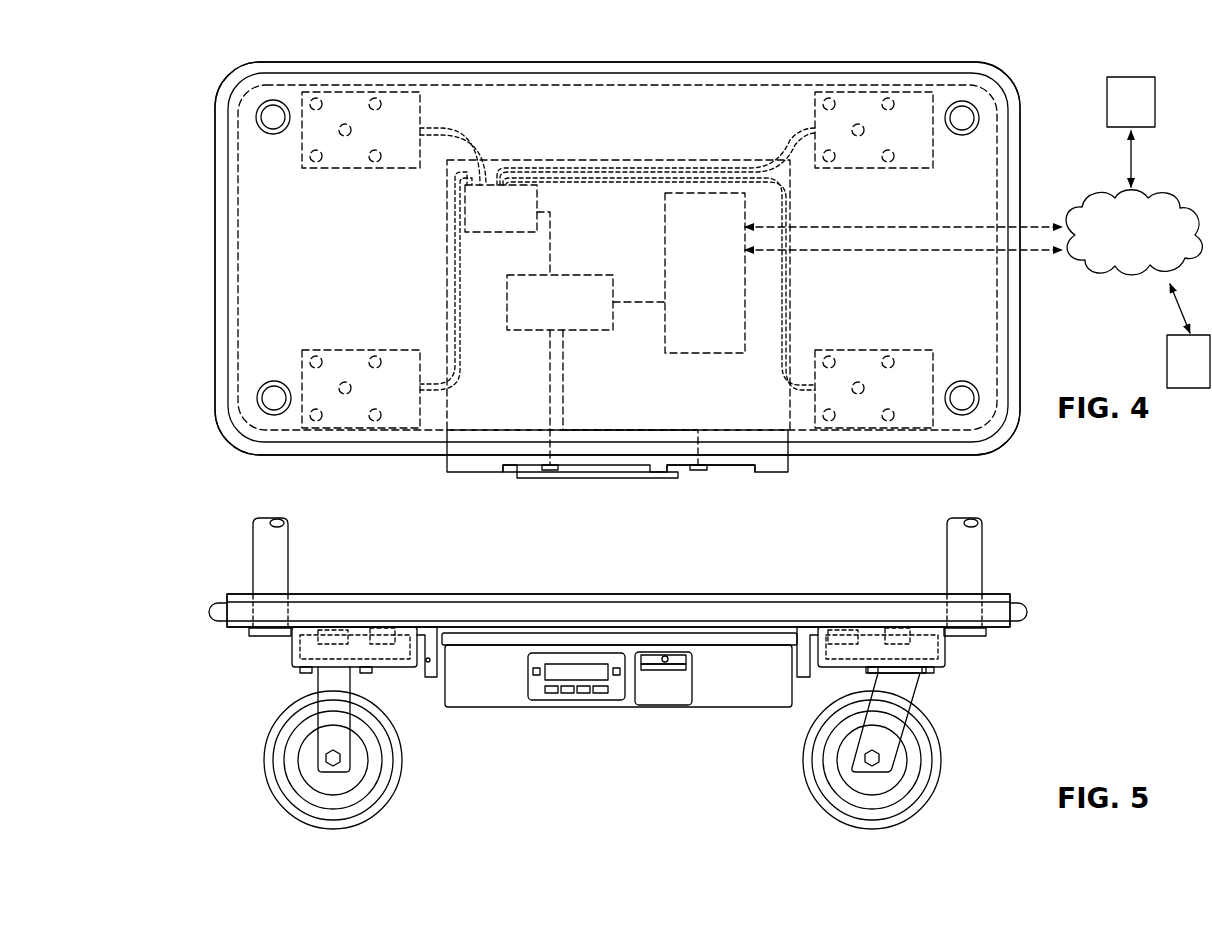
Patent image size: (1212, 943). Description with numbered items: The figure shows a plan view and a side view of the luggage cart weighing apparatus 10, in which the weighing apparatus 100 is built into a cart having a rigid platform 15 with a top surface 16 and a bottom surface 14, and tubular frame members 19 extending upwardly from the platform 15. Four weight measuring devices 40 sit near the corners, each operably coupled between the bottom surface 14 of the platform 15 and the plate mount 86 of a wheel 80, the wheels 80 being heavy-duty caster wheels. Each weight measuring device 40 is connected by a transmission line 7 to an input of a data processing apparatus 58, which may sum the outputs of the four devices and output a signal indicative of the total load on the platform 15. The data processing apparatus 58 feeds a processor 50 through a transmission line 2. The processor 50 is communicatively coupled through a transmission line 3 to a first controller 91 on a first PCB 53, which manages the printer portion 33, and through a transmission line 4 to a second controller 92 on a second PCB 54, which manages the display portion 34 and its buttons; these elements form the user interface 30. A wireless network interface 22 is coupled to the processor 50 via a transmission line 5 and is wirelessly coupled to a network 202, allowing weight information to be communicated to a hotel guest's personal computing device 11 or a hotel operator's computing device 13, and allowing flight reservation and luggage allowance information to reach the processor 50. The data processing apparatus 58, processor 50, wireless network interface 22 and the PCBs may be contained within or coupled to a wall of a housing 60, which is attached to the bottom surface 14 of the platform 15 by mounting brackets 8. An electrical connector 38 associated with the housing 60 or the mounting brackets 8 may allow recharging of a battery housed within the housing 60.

In FIG. 4, the weighing apparatus 100 is at (1014, 74).
In FIG. 5, the luggage cart weighing apparatus 10 is at (200, 534).
In FIG. 4, the platform 15 is at (205, 243).
In FIG. 5, the platform 15 is at (1030, 609).
In FIG. 4, the top surface 16 is at (228, 272).
In FIG. 5, the top surface 16 is at (998, 596).
In FIG. 4, the bottom surface 14 is at (238, 316).
In FIG. 5, the bottom surface 14 is at (1000, 628).
In FIG. 4, the tubular frame members 19 is at (260, 104).
In FIG. 5, the tubular frame members 19 is at (288, 544).
In FIG. 4, the weight measuring devices 40 is at (302, 140).
In FIG. 5, the weight measuring devices 40 is at (290, 653).
In FIG. 4, the housing 60 is at (600, 158).
In FIG. 4, the transmission lines 7 is at (450, 128).
In FIG. 4, the data processing apparatus 58 is at (501, 208).
In FIG. 4, the transmission line 2 is at (548, 242).
In FIG. 4, the processor 50 is at (560, 302).
In FIG. 4, the transmission line 5 is at (636, 302).
In FIG. 4, the wireless network interface 22 is at (705, 273).
In FIG. 4, the transmission line 4 is at (548, 410).
In FIG. 4, the transmission line 3 is at (640, 430).
In FIG. 4, the user interface 30 is at (589, 480).
In FIG. 5, the user interface 30 is at (587, 712).
In FIG. 4, the second PCB 54 is at (512, 472).
In FIG. 4, the second controller 92 is at (550, 470).
In FIG. 4, the first controller 91 is at (698, 470).
In FIG. 4, the first PCB 53 is at (733, 468).
In FIG. 4, the personal computing device 11 is at (1131, 132).
In FIG. 4, the network 202 is at (1125, 278).
In FIG. 4, the computing device 13 is at (1188, 336).
In FIG. 5, the mounting brackets 8 is at (432, 650).
In FIG. 5, the electrical connector 38 is at (430, 664).
In FIG. 5, the display portion 34 is at (526, 676).
In FIG. 5, the printer portion 33 is at (692, 688).
In FIG. 5, the wheels 80 is at (950, 722).
In FIG. 5, the plate mount 86 is at (916, 672).